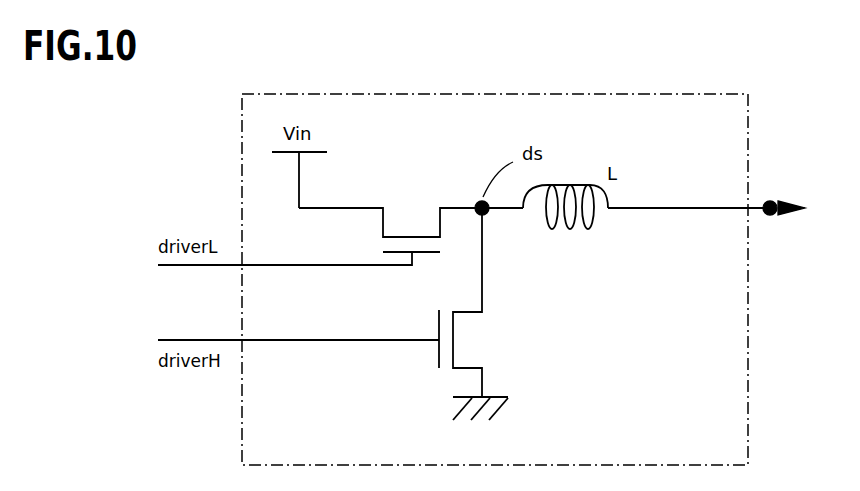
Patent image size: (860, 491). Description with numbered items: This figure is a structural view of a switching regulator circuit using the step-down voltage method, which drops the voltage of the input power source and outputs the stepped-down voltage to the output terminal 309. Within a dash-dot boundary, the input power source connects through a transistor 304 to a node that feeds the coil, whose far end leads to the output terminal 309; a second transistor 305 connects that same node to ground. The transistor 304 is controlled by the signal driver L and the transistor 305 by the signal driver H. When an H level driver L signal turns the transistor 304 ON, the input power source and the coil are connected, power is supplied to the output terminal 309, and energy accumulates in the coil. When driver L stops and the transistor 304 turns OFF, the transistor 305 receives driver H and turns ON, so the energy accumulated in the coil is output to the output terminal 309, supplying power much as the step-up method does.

The transistor 304 is at (395, 208).
The transistor 305 is at (482, 323).
The output terminal 309 is at (775, 190).